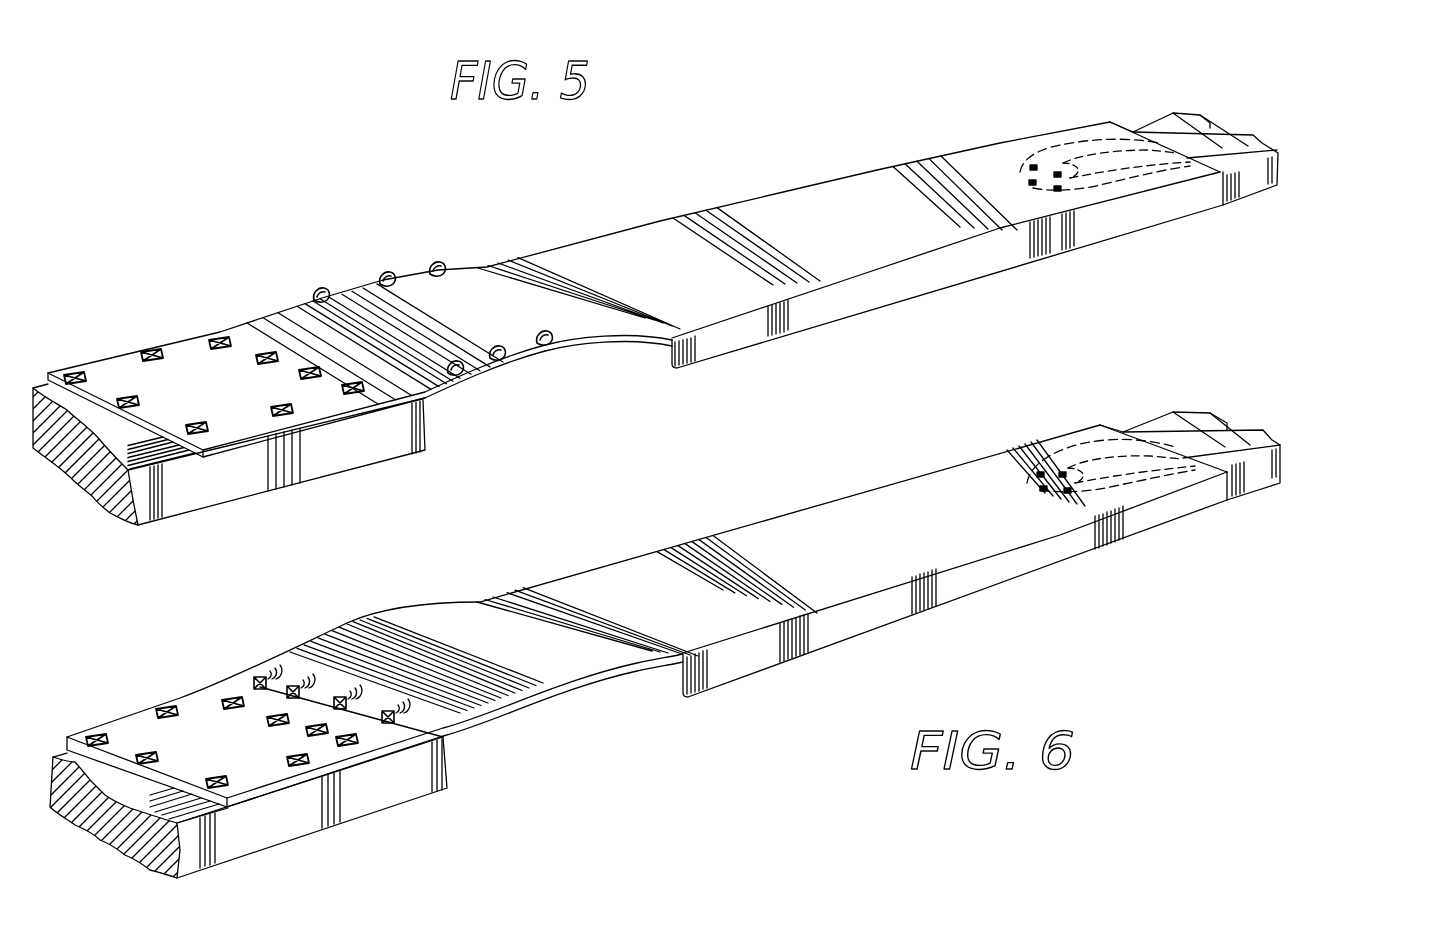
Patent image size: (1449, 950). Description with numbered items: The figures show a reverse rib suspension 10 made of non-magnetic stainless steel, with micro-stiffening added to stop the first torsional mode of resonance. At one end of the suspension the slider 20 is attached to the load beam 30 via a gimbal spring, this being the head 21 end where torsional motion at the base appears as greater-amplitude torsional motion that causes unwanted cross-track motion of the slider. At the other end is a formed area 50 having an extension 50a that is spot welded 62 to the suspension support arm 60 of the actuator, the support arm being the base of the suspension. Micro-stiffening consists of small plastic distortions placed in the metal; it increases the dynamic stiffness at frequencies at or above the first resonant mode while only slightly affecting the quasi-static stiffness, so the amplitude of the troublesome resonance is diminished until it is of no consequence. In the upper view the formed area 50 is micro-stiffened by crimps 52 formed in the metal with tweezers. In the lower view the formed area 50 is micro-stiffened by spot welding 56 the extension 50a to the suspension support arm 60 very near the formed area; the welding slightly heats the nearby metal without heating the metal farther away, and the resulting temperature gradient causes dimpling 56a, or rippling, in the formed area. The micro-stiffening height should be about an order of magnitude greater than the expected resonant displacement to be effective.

In FIG. 5, the suspension 10 is at (787, 370).
In FIG. 6, the suspension 10 is at (755, 697).
In FIG. 5, the slider 20 is at (1280, 172).
In FIG. 6, the slider 20 is at (1283, 456).
In FIG. 5, the head 21 is at (1080, 137).
In FIG. 6, the head 21 is at (1072, 437).
In FIG. 5, the load beam 30 is at (1073, 241).
In FIG. 6, the load beam 30 is at (1030, 562).
In FIG. 5, the formed area 50 is at (401, 271).
In FIG. 6, the formed area 50 is at (435, 612).
In FIG. 5, the extension 50a is at (365, 412).
In FIG. 6, the extension 50a is at (392, 753).
In FIG. 5, the crimps 52 is at (550, 347).
In FIG. 6, the spot welding 56 is at (293, 686).
In FIG. 6, the dimpling 56a is at (308, 673).
In FIG. 5, the suspension support arm 60 is at (228, 486).
In FIG. 6, the suspension support arm 60 is at (367, 787).
In FIG. 5, the spot welds 62 is at (151, 353).
In FIG. 6, the spot welds 62 is at (167, 712).